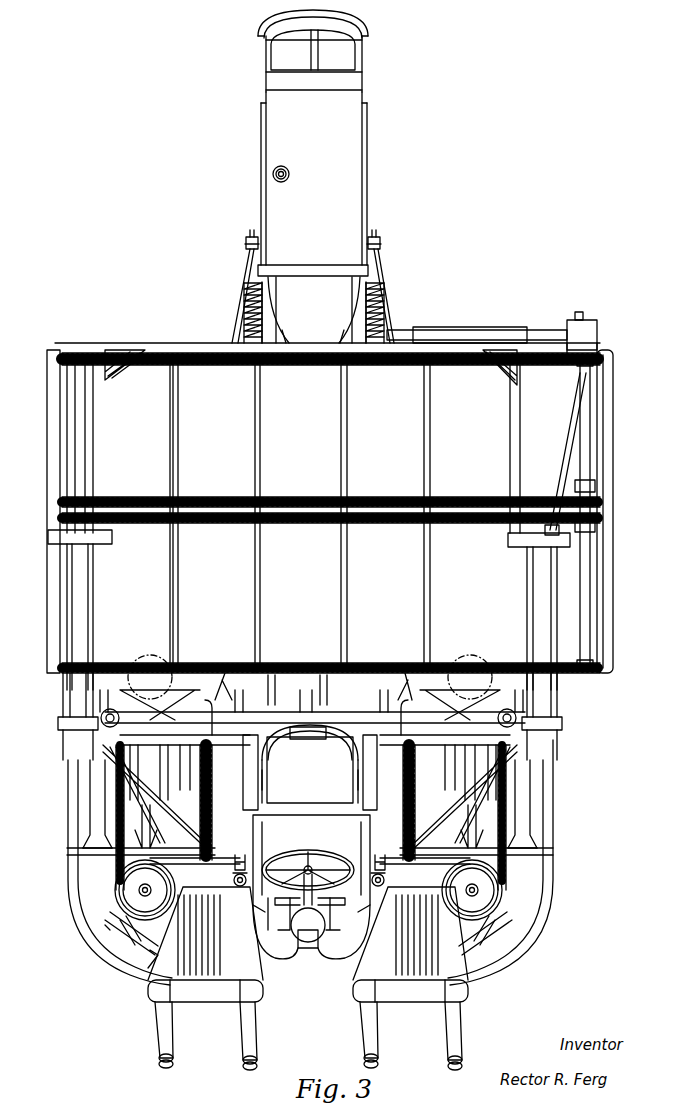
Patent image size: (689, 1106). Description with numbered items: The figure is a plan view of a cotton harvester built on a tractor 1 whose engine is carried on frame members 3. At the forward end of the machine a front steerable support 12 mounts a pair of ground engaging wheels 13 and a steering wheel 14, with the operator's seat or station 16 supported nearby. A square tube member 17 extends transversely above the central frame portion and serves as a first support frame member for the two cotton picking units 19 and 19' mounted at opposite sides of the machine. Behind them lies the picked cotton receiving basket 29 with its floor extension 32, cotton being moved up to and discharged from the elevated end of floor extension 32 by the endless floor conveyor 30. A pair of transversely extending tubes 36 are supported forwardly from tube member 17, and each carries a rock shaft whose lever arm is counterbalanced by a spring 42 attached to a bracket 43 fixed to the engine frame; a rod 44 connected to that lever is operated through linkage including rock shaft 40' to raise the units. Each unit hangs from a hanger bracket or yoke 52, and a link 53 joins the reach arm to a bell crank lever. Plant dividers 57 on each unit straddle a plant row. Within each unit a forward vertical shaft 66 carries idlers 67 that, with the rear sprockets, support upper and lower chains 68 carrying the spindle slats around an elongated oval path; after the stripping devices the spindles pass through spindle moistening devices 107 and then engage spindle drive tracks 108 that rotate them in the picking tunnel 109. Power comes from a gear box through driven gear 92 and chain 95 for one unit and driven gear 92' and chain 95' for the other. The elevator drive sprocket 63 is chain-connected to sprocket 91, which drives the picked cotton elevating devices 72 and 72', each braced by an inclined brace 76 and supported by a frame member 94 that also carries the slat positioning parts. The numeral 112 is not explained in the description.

The tractor 1 is at (328, 184).
The frame members 3 is at (345, 330).
The front steerable support 12 is at (308, 948).
The ground engaging wheels 13 is at (280, 965).
The steering wheel 14 is at (316, 848).
The operator's seat or station 16 is at (287, 800).
The tube member 17 is at (318, 730).
The cotton picking unit 19 is at (476, 862).
The cotton picking unit 19' is at (141, 872).
The picked cotton receiving basket 29 is at (310, 561).
The floor conveyor 30 is at (180, 535).
The floor extension 32 is at (600, 510).
The transversely extending tubes 36 is at (310, 709).
The rock shaft 40' is at (313, 672).
The counter-balancing spring 42 is at (244, 312).
The bracket 43 is at (246, 244).
The rod 44 is at (270, 690).
The hanger bracket or yoke 52 is at (312, 802).
The link 53 is at (175, 698).
The plant dividers 57 is at (240, 1022).
The elevator drive sprocket 63 is at (150, 655).
The forward vertical shaft 66 is at (138, 890).
The idlers 67 is at (128, 905).
The upper and lower chains 68 is at (130, 938).
The picked cotton elevating device 72 is at (563, 716).
The picked cotton elevating device 72' is at (59, 716).
The brace 76 is at (100, 755).
The sprocket 91 is at (105, 727).
The driven gear 92 is at (317, 752).
The driven gear 92' is at (310, 763).
The frame member 94 is at (535, 825).
The driven chain 95 is at (402, 670).
The chain 95' is at (223, 669).
The spindle moistening devices 107 is at (150, 955).
The spindle drive tracks 108 is at (240, 850).
The picking tunnel 109 is at (245, 862).
The post 112 is at (90, 577).